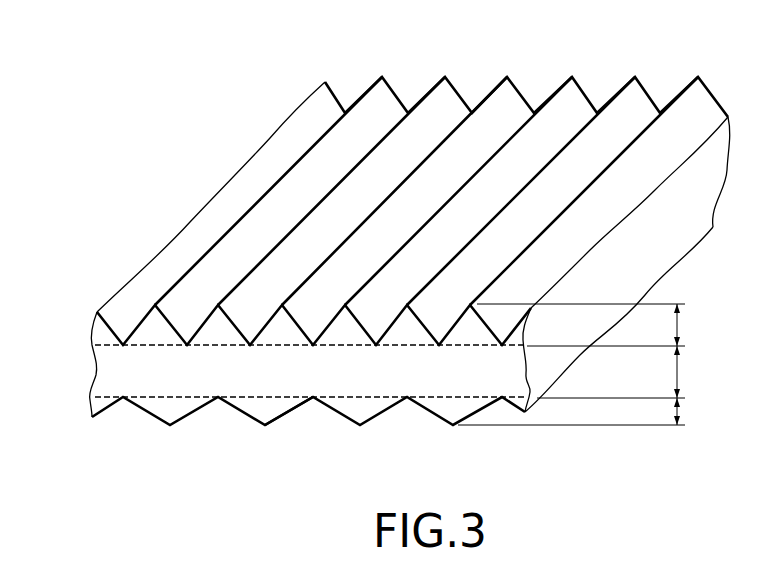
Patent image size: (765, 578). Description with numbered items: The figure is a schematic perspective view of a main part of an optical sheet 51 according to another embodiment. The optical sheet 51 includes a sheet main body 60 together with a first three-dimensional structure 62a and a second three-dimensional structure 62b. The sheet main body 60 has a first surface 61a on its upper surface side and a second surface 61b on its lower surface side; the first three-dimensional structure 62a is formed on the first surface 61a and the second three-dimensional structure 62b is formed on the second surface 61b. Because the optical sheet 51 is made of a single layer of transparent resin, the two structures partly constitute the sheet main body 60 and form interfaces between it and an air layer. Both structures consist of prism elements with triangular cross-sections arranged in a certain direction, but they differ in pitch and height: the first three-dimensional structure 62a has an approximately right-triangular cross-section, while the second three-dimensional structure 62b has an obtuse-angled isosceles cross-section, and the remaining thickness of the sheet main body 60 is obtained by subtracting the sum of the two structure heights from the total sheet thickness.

The optical sheet 51 is at (126, 157).
The sheet main body 60 is at (105, 373).
The first surface 61a is at (250, 237).
The first 3-D structure 62a is at (610, 95).
The second surface 61b is at (147, 413).
The second 3-D structure 62b is at (290, 413).